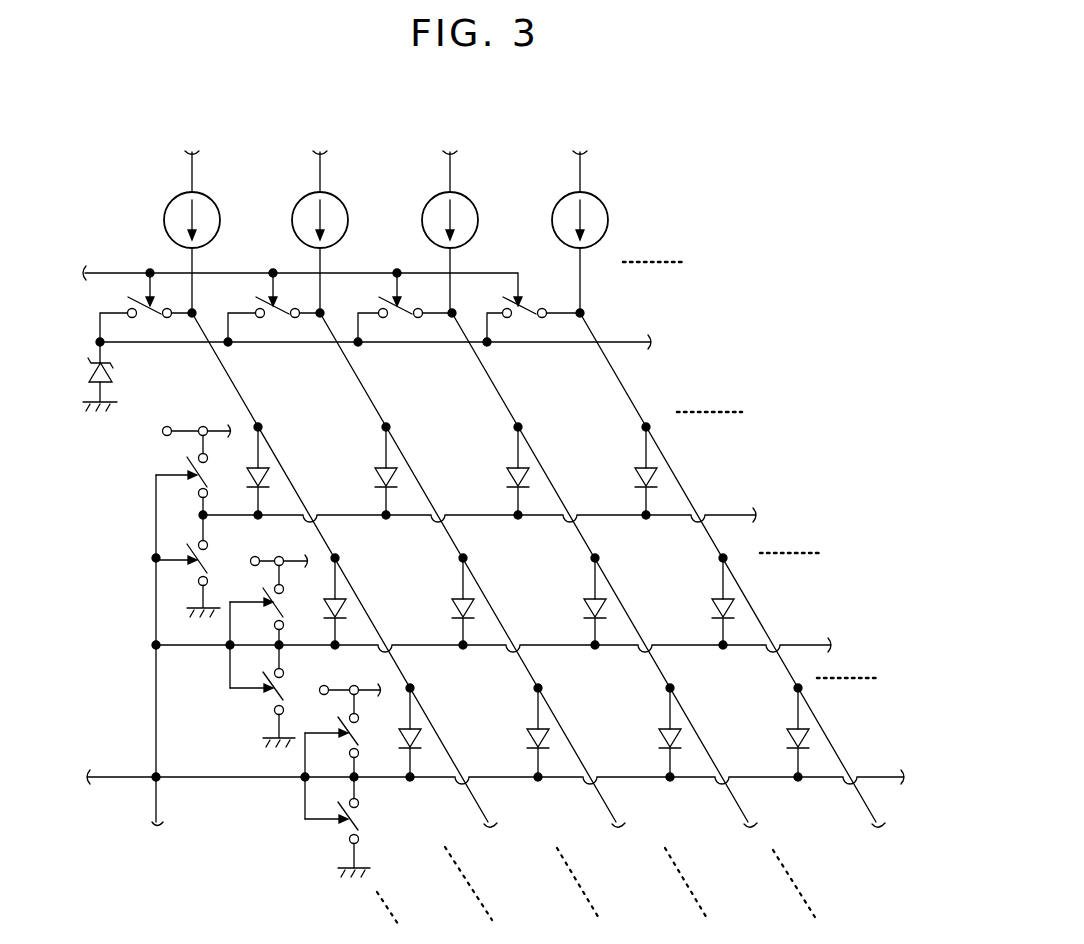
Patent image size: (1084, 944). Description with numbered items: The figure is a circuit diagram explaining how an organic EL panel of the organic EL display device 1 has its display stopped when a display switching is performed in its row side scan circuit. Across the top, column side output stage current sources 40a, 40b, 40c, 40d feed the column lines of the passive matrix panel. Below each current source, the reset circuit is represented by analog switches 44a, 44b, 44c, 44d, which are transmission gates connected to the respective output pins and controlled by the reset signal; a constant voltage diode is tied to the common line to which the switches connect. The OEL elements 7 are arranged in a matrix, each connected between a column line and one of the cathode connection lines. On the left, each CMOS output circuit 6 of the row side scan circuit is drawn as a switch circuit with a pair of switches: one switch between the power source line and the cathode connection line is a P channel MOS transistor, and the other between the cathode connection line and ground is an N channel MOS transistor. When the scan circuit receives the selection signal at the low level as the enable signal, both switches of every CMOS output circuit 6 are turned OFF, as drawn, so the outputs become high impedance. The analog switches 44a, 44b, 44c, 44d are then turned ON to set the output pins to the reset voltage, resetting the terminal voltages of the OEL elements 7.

The organic EL display device 1 is at (753, 206).
The column side output stage current source 40a is at (212, 200).
The column side output stage current source 40b is at (340, 200).
The column side output stage current source 40c is at (470, 200).
The column side output stage current source 40d is at (600, 200).
The analog switch 44a is at (147, 316).
The analog switch 44b is at (282, 316).
The analog switch 44c is at (406, 316).
The analog switch 44d is at (534, 316).
The OEL element 7 is at (270, 468).
The CMOS output circuit 6 is at (180, 512).